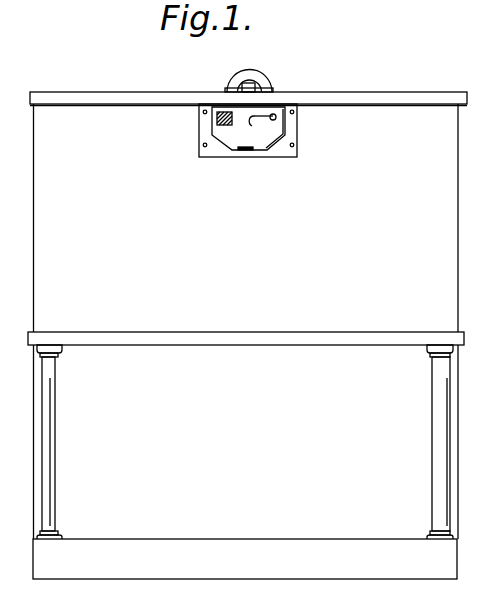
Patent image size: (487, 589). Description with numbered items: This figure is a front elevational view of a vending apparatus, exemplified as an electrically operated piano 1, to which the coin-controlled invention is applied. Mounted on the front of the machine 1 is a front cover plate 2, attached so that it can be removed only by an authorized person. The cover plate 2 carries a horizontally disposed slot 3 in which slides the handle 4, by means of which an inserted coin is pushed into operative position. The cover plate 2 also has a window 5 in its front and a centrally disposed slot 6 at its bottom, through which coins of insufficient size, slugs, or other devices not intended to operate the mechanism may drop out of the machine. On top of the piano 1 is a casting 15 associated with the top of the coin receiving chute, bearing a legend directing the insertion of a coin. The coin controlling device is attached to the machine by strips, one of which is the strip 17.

The electrically operated piano 1 is at (455, 186).
The front cover plate 2 is at (270, 156).
The horizontally disposed slot 3 is at (252, 121).
The handle 4 is at (272, 122).
The window 5 is at (217, 118).
The centrally disposed slot 6 is at (243, 151).
The casting 15 is at (232, 78).
The strip 17 is at (30, 588).